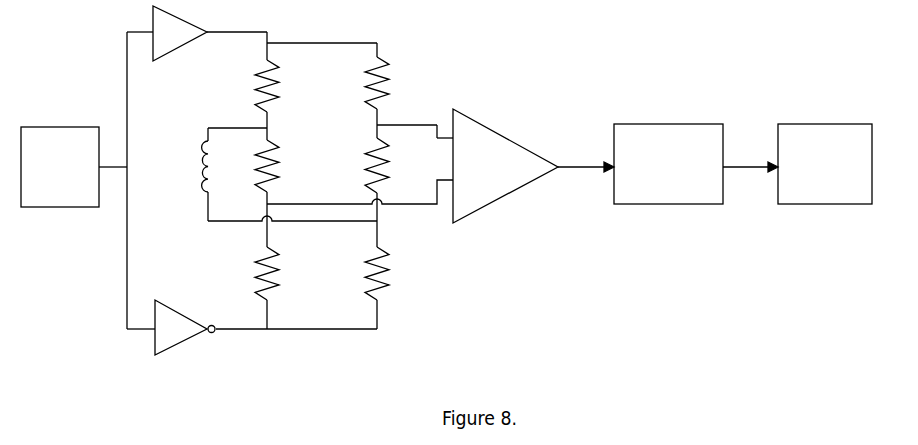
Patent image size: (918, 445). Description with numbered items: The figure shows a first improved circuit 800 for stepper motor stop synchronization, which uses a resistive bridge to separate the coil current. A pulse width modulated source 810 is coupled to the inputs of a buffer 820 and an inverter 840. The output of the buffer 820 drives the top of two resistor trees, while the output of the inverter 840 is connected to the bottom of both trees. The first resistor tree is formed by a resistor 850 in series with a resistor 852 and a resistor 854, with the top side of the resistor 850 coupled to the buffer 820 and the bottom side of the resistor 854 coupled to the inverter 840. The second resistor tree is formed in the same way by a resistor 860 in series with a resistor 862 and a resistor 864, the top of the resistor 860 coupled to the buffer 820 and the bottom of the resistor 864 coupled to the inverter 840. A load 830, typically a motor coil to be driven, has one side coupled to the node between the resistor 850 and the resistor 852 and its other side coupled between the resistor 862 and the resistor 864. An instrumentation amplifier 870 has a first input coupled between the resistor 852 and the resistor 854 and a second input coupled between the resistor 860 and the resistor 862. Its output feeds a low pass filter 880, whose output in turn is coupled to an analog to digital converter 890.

The first improved circuit 800 is at (75, 32).
The pulse width modulated source 810 is at (60, 152).
The buffer 820 is at (191, 30).
The load 830 is at (183, 174).
The inverter 840 is at (185, 318).
The resistor 850 is at (288, 80).
The resistor 852 is at (288, 163).
The resistor 854 is at (288, 268).
The resistor 860 is at (396, 78).
The resistor 862 is at (396, 163).
The resistor 864 is at (397, 268).
The instrumentation amplifier 870 is at (505, 162).
The low pass filter 880 is at (668, 150).
The analog to digital converter 890 is at (825, 150).